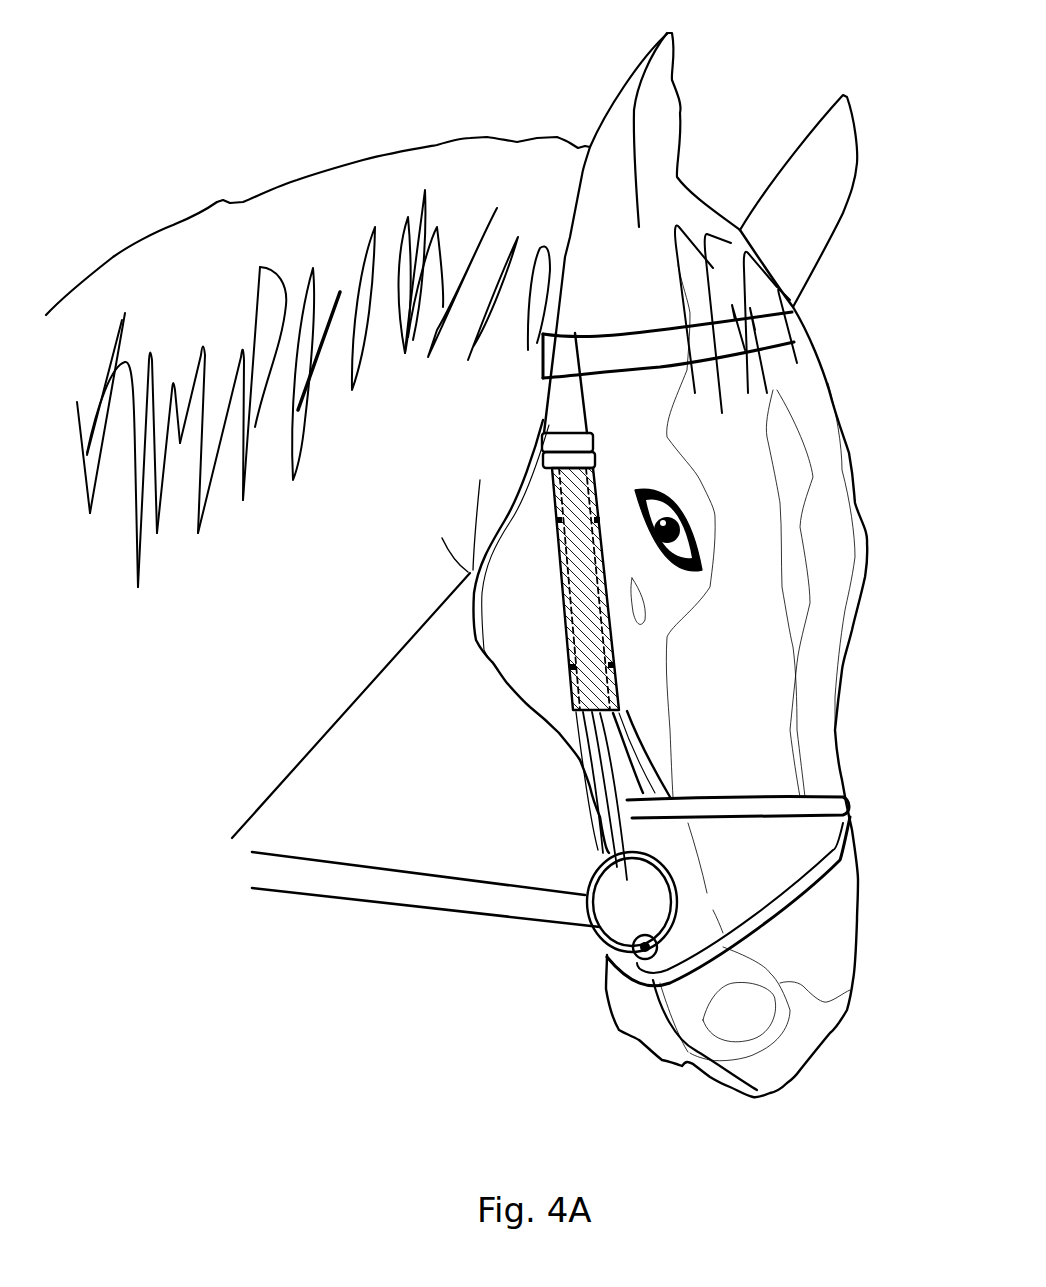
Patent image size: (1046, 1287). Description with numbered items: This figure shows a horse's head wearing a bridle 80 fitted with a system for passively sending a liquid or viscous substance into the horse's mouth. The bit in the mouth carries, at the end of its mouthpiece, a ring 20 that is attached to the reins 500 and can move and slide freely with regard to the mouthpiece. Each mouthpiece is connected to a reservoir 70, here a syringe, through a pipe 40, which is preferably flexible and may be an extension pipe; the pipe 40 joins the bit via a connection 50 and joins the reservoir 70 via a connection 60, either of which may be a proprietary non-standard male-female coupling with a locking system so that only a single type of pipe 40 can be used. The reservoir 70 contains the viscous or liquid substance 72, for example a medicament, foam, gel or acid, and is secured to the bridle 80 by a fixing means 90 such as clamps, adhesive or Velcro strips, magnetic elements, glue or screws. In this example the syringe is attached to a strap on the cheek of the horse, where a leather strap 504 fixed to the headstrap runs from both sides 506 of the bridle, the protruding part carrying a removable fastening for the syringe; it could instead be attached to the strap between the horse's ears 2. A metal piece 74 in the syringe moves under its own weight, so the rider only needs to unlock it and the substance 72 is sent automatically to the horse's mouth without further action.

The horse's ears 2 is at (817, 697).
The ring 20 is at (673, 883).
The pipe 40 is at (603, 763).
The connection 50 is at (643, 943).
The connection 60 is at (585, 710).
The reservoir 70 is at (610, 617).
The viscous and/or liquid substance 72 is at (563, 615).
The metal piece 74 is at (587, 460).
The bridle 80 is at (602, 823).
The fixing means 90 is at (598, 518).
The reins 500 is at (367, 890).
The leather strap 504 is at (605, 347).
The sides of the bridle 506 is at (562, 395).